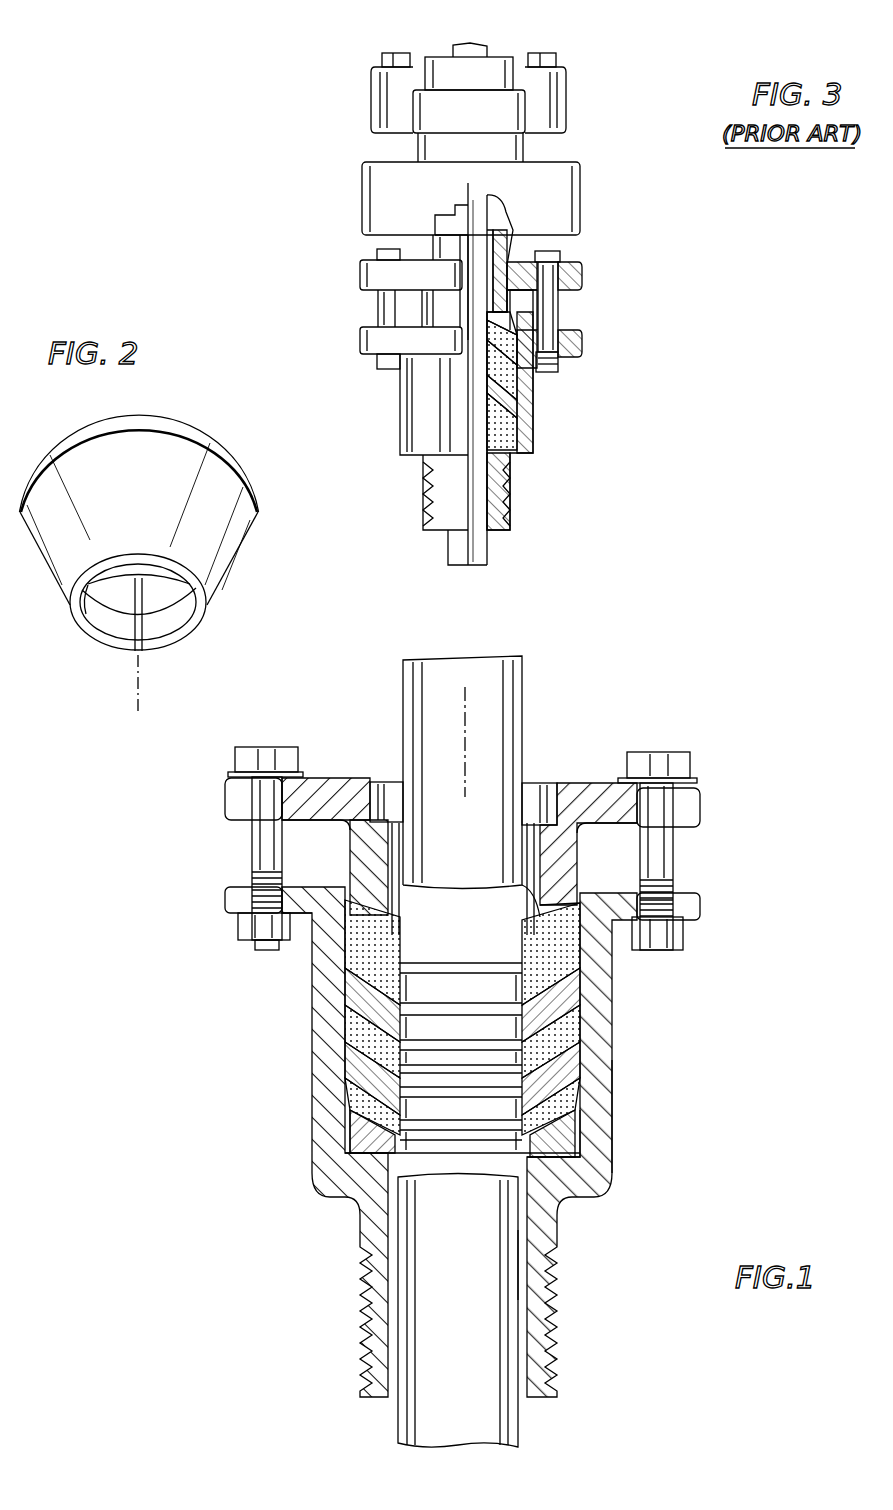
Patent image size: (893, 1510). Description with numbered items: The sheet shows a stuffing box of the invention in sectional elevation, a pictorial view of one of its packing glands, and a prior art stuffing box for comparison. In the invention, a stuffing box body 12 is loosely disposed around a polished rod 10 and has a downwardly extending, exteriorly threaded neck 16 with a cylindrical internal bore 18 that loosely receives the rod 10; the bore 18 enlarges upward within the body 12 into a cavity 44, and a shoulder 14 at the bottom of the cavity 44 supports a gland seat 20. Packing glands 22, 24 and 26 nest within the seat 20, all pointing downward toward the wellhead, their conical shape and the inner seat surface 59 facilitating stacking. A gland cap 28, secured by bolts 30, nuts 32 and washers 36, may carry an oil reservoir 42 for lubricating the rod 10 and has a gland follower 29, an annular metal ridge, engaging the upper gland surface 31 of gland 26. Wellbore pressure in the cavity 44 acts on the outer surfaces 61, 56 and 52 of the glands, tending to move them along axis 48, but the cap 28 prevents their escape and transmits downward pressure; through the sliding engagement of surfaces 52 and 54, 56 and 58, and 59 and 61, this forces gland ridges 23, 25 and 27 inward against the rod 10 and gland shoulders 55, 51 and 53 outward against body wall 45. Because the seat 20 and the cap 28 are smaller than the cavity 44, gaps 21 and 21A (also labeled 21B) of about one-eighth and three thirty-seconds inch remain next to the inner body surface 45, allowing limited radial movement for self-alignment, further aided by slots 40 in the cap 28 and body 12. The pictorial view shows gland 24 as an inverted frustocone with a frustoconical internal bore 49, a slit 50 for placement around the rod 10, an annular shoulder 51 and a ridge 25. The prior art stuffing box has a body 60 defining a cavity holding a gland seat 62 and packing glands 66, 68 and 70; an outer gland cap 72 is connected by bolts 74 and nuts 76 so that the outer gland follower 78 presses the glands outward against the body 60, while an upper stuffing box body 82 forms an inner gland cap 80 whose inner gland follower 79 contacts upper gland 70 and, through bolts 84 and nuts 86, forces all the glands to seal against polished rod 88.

In FIG. 1, the polished rod 10 is at (515, 680).
In FIG. 1, the stuffing box body 12 is at (612, 1040).
In FIG. 1, the shoulder 14 is at (595, 1140).
In FIG. 1, the neck 16 is at (557, 1345).
In FIG. 1, the cylindrical internal bore 18 is at (520, 1272).
In FIG. 1, the gland seat 20 is at (372, 1168).
In FIG. 1, the gap 21 is at (350, 1150).
In FIG. 1, the gap 21A is at (560, 907).
In FIG. 1, the gland sleeve 21B is at (395, 862).
In FIG. 1, the packing gland 22 is at (345, 1080).
In FIG. 1, the gland ridge 23 is at (515, 1105).
In FIG. 2, the packing gland 24 is at (238, 550).
In FIG. 1, the packing gland 24 is at (345, 1020).
In FIG. 2, the ridge 25 is at (190, 623).
In FIG. 1, the ridge 25 is at (515, 1050).
In FIG. 1, the packing gland 26 is at (370, 955).
In FIG. 1, the gland ridge 27 is at (515, 990).
In FIG. 1, the gland cap 28 is at (593, 800).
In FIG. 1, the gland follower 29 is at (650, 907).
In FIG. 1, the bolts 30 is at (262, 838).
In FIG. 1, the upper gland surface 31 is at (535, 910).
In FIG. 1, the nuts 32 is at (245, 955).
In FIG. 1, the washers 36 is at (232, 775).
In FIG. 1, the slots 40 is at (235, 802).
In FIG. 1, the oil reservoir 42 is at (537, 795).
In FIG. 1, the cavity 44 is at (575, 960).
In FIG. 1, the body wall 45 is at (582, 1125).
In FIG. 2, the axis 48 is at (140, 700).
In FIG. 1, the axis 48 is at (465, 700).
In FIG. 2, the internal bore 49 is at (167, 568).
In FIG. 2, the slit 50 is at (150, 652).
In FIG. 2, the annular shoulder 51 is at (222, 450).
In FIG. 1, the annular shoulder 51 is at (350, 992).
In FIG. 1, the outer surface 52 is at (570, 965).
In FIG. 1, the shoulder 53 is at (345, 1045).
In FIG. 2, the inner surface 54 is at (103, 605).
In FIG. 1, the inner surface 54 is at (585, 1000).
In FIG. 1, the shoulder 55 is at (320, 912).
In FIG. 1, the outer surface 56 is at (580, 1050).
In FIG. 1, the inner surface 58 is at (580, 1085).
In FIG. 1, the inner seat surface 59 is at (355, 1115).
In FIG. 3, the stuffing box body 60 is at (533, 425).
In FIG. 1, the outer surface 61 is at (580, 1120).
In FIG. 3, the gland seat 62 is at (525, 440).
In FIG. 3, the packing gland 66 is at (527, 407).
In FIG. 3, the packing gland 68 is at (522, 387).
In FIG. 3, the packing gland 70 is at (553, 372).
In FIG. 3, the outer gland cap 72 is at (565, 277).
In FIG. 3, the bolts 74 is at (372, 297).
In FIG. 3, the nuts 76 is at (372, 355).
In FIG. 3, the outer gland follower 78 is at (505, 335).
In FIG. 3, the inner gland follower 79 is at (497, 320).
In FIG. 3, the inner gland cap 80 is at (497, 250).
In FIG. 3, the upper stuffing box body 82 is at (570, 197).
In FIG. 3, the bolts 84 is at (455, 210).
In FIG. 3, the nuts 86 is at (458, 358).
In FIG. 3, the polished rod 88 is at (480, 550).